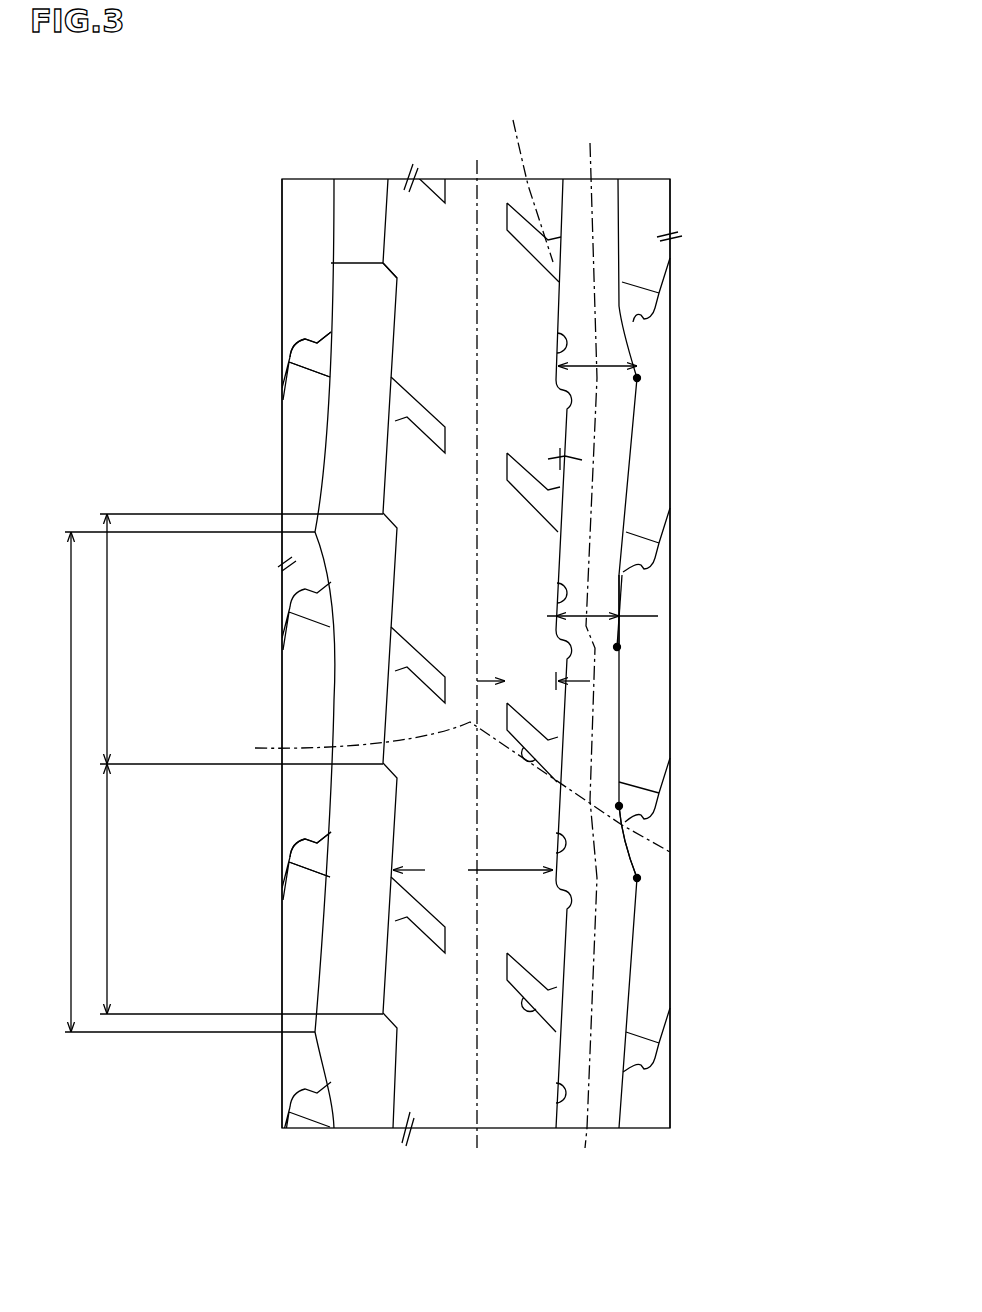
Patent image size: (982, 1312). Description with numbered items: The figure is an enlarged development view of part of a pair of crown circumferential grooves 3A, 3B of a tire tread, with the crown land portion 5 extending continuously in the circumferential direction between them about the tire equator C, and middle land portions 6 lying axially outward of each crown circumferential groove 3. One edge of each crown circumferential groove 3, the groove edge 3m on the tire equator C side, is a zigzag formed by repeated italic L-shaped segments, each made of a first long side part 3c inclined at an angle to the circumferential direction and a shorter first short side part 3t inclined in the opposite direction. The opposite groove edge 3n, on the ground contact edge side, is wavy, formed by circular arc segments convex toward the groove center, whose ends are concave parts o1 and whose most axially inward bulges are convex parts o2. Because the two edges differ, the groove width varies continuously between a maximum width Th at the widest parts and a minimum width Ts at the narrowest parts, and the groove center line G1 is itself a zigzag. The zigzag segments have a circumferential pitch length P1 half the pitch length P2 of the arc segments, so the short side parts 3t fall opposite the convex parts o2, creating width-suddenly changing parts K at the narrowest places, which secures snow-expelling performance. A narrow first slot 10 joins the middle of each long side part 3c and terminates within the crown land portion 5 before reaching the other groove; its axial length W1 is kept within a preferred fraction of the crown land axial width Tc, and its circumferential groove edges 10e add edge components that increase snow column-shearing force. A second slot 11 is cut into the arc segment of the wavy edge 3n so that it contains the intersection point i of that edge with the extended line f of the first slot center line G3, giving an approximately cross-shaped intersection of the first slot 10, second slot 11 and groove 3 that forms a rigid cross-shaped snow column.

The crown circumferential groove 3 is at (390, 270).
The crown circumferential groove 3A is at (577, 186).
The crown circumferential groove 3B is at (370, 186).
The first long side part 3c is at (563, 340).
The first short side part 3t is at (565, 410).
The groove edge 3m is at (212, 298).
The groove edge 3n is at (618, 230).
The crown land portion 5 is at (457, 176).
The middle land portion 6 is at (308, 176).
The first slot 10 is at (523, 234).
The groove edge of first slot 10e is at (548, 752).
The second slot 11 is at (650, 295).
The tire equator C is at (475, 645).
The center line of groove G1 is at (585, 1103).
The center line of first slot G3 is at (442, 475).
The circumferential pitch length P1 is at (237, 764).
The circumferential pitch length P2 is at (185, 782).
The axial width of crown land portion Tc is at (473, 874).
The axial length of first slot W1 is at (533, 684).
The groove width at maximum groove width part Th is at (622, 364).
The groove width at minimum groove width part Ts is at (597, 615).
The concave part o1 is at (640, 377).
The axially inwardly convex part o2 is at (620, 646).
The width-suddenly changing part K is at (620, 652).
The intersection point i is at (622, 806).
The extended line f is at (626, 828).